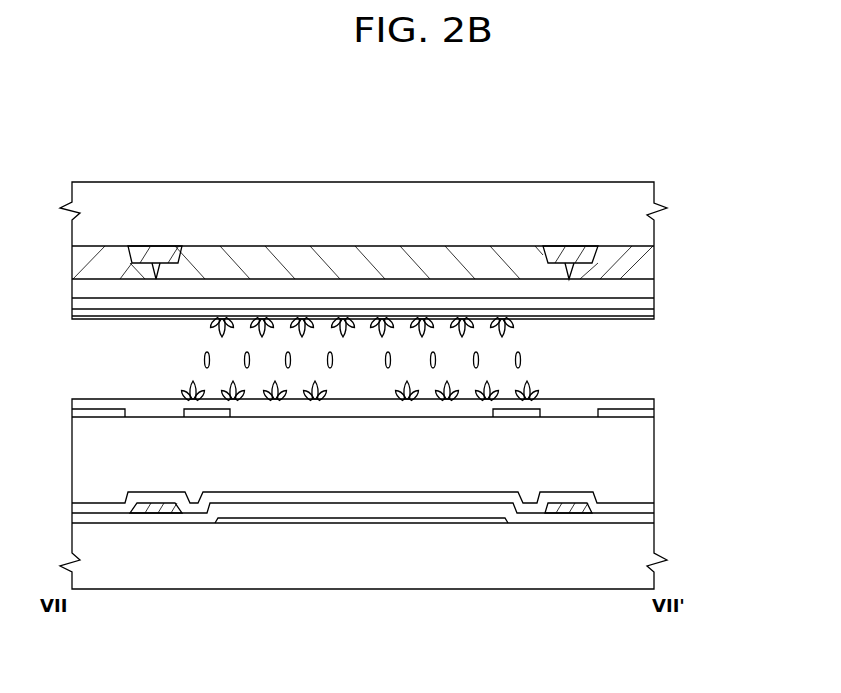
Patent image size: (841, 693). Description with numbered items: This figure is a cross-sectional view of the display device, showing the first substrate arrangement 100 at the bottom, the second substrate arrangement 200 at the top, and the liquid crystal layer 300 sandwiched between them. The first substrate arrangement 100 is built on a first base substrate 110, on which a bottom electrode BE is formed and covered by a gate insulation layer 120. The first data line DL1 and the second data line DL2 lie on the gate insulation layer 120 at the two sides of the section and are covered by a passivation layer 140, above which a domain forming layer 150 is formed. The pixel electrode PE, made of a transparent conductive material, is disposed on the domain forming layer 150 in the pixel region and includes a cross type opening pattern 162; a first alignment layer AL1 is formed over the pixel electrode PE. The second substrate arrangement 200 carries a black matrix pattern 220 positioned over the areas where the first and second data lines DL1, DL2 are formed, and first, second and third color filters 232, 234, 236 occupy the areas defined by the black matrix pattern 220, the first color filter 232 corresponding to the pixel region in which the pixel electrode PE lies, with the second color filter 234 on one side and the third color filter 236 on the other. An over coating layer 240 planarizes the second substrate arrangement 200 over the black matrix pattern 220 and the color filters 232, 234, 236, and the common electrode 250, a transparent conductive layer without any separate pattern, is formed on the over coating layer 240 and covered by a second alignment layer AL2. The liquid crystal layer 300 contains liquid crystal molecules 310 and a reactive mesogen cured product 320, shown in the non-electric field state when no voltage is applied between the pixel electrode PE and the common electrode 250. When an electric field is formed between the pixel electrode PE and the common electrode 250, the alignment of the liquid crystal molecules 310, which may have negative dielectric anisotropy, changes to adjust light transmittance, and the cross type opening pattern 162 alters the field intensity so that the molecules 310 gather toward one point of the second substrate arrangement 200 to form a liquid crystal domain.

The second substrate arrangement 200 is at (730, 182).
The black matrix pattern 220 is at (158, 254).
The first color filter 232 is at (353, 257).
The second color filter 234 is at (107, 258).
The third color filter 236 is at (620, 258).
The over coating layer 240 is at (648, 289).
The common electrode 250 is at (645, 309).
The second alignment layer AL2 is at (650, 317).
The liquid crystal layer 300 is at (730, 326).
The liquid crystal molecules 310 is at (522, 358).
The reactive mesogen cured product 320 is at (532, 392).
The first substrate arrangement 100 is at (730, 399).
The first alignment layer AL1 is at (647, 405).
The pixel electrode PE is at (500, 411).
The domain forming layer 150 is at (650, 450).
The passivation layer 140 is at (647, 508).
The gate insulation layer 120 is at (647, 518).
The first base substrate 110 is at (647, 548).
The bottom electrode BE is at (323, 523).
The cross type opening pattern 162 is at (367, 417).
The first data line DL1 is at (148, 510).
The second data line DL2 is at (565, 510).